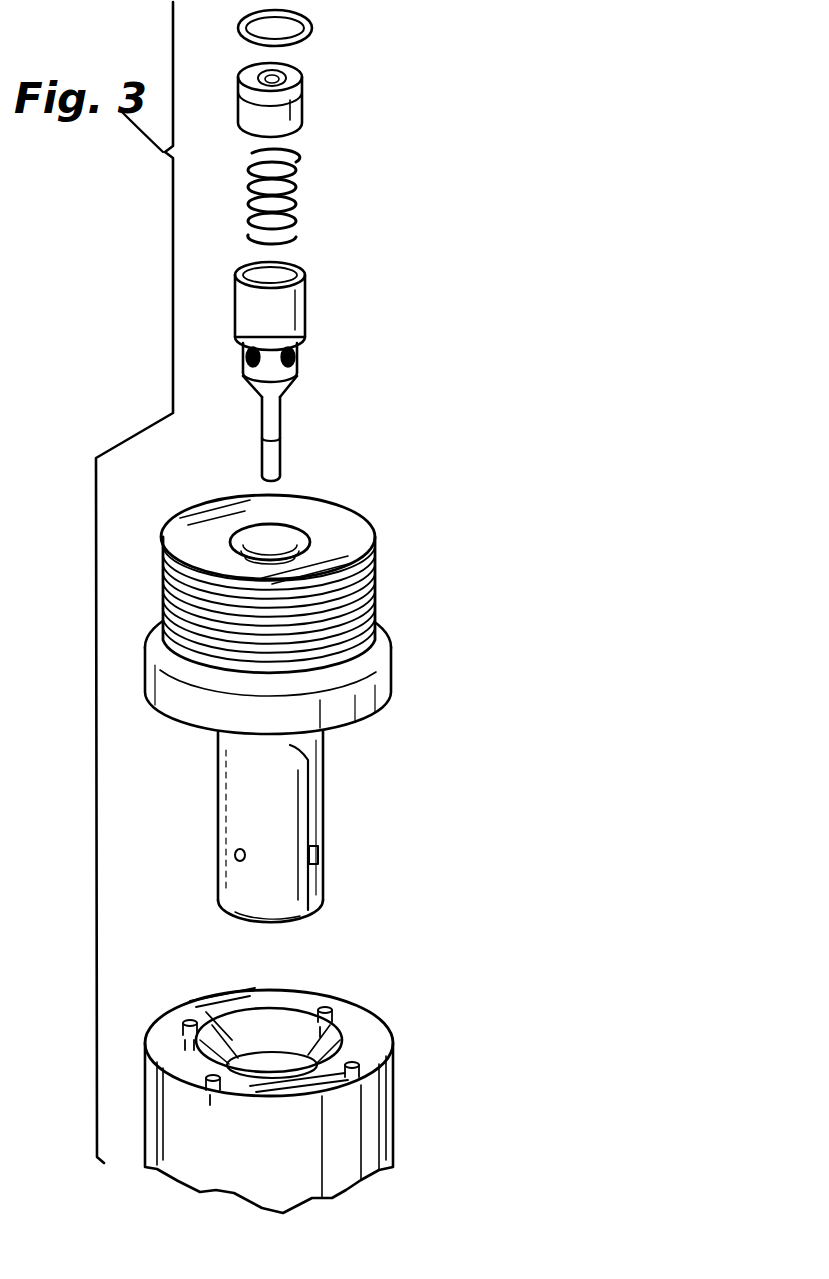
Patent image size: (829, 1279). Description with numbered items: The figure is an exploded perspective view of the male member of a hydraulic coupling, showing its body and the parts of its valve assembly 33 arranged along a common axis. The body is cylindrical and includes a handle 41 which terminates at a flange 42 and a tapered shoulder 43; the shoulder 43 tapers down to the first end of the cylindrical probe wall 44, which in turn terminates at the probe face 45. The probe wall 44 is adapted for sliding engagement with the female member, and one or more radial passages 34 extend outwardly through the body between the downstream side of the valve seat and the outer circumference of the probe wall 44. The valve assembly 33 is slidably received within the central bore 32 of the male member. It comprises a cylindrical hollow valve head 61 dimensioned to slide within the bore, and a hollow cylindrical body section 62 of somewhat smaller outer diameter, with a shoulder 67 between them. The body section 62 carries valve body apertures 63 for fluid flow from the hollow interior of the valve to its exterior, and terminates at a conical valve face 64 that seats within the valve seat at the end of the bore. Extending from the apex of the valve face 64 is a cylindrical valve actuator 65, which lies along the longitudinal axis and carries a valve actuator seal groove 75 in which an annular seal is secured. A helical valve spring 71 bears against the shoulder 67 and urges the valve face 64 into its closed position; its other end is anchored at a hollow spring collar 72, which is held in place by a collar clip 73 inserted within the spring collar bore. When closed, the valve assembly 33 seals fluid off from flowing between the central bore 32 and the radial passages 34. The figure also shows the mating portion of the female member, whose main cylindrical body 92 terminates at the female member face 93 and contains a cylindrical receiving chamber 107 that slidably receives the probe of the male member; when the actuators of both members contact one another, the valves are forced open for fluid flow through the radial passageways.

The collar clip 73 is at (312, 36).
The hollow spring collar 72 is at (302, 100).
The helical valve spring 71 is at (297, 176).
The valve assembly 33 is at (328, 250).
The hollow valve head 61 is at (322, 371).
The shoulder 67 is at (300, 343).
The valve body apertures 63 is at (297, 360).
The hollow cylindrical body section 62 is at (297, 366).
The valve face 64 is at (292, 383).
The valve actuator 65 is at (281, 423).
The valve actuator seal groove 75 is at (281, 443).
The central bore 32 is at (308, 533).
The handle 41 is at (163, 598).
The flange 42 is at (391, 693).
The tapered shoulder 43 is at (323, 765).
The cylindrical probe wall 44 is at (323, 808).
The radial passages 34 is at (323, 857).
The probe face 45 is at (300, 916).
The cylindrical receiving chamber 107 is at (230, 1033).
The female member face 93 is at (362, 1030).
The main cylindrical body 92 is at (393, 1097).